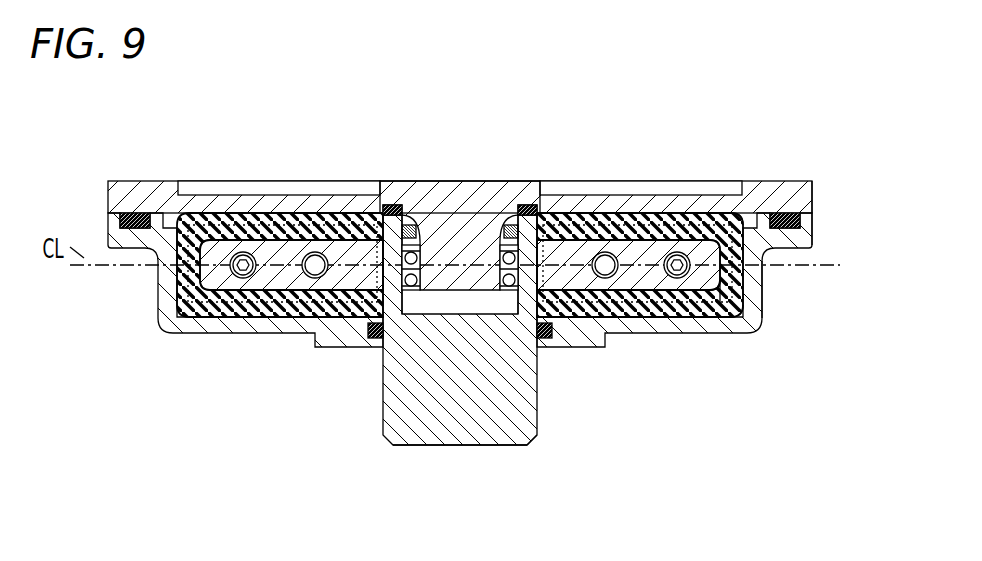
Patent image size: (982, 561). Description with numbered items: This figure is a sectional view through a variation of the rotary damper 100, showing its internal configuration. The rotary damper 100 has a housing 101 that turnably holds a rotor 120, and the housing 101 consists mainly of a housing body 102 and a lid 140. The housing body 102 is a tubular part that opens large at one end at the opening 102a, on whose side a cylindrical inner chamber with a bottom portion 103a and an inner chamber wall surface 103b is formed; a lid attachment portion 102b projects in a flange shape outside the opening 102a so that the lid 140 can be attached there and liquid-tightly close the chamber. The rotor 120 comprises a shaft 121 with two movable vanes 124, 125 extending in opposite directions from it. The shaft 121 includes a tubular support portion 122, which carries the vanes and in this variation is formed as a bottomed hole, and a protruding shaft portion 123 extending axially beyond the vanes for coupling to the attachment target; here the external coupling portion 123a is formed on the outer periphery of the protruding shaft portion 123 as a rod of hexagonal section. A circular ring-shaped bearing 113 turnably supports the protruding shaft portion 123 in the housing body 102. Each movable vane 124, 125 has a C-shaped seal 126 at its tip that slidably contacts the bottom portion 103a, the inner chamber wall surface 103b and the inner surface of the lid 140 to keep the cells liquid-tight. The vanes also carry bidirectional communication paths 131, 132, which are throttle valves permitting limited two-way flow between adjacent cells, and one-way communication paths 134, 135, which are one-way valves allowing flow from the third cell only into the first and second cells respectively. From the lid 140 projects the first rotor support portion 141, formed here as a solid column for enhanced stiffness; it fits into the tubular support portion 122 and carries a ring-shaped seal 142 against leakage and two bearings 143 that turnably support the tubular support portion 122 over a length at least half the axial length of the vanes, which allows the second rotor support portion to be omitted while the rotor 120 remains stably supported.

The rotary damper 100 is at (150, 118).
The housing 101 is at (896, 181).
The housing body 102 is at (812, 222).
The opening 102a is at (726, 213).
The lid attachment portion 102b is at (804, 213).
The bottom portion 103a is at (707, 312).
The inner chamber wall surface 103b is at (763, 292).
The bearing 113 is at (541, 340).
The rotor 120 is at (383, 405).
The shaft 121 is at (385, 214).
The tubular support portion 122 is at (414, 226).
The protruding shaft portion 123 is at (440, 446).
The external coupling portion 123a is at (537, 430).
The movable vane 124 is at (594, 225).
The movable vane 125 is at (280, 225).
The seal 126 is at (203, 213).
The bidirectional communication path 131 is at (678, 213).
The bidirectional communication path 132 is at (267, 290).
The one-way communication path 134 is at (640, 290).
The one-way communication path 135 is at (316, 252).
The lid 140 is at (812, 195).
The first rotor support portion 141 is at (530, 247).
The seal 142 is at (394, 206).
The bearing 143 is at (498, 277).